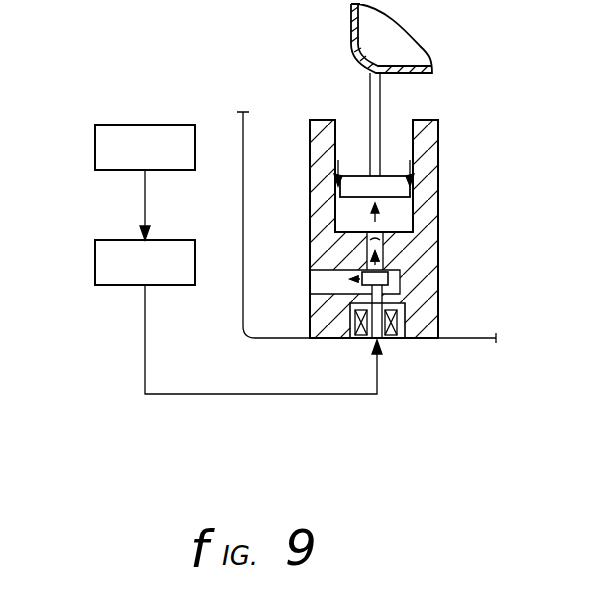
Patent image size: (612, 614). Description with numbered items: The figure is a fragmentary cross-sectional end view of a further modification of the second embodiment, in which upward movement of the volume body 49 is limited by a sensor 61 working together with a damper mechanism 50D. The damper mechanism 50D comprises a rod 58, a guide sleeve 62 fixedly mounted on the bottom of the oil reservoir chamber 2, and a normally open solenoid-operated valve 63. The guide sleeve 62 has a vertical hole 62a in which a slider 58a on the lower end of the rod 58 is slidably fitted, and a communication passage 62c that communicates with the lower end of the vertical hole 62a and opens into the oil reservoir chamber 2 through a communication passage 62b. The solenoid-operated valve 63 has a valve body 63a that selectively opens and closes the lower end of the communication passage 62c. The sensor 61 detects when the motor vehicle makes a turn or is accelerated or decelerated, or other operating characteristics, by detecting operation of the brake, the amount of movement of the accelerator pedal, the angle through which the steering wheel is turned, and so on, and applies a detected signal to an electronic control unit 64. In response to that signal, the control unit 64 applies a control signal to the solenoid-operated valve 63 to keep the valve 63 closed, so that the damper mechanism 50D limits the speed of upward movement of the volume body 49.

The oil reservoir chamber 2 is at (243, 172).
The volume body 49 is at (349, 28).
The damper mechanism 50D is at (445, 153).
The rod 58 is at (367, 90).
The slider 58a is at (405, 187).
The sensor 61 is at (100, 152).
The guide sleeve 62 is at (310, 205).
The vertical hole 62a is at (343, 132).
The communication passage 62b is at (327, 287).
The communication passage 62c is at (382, 248).
The solenoid-operated valve 63 is at (390, 340).
The valve body 63a is at (395, 280).
The electronic control unit 64 is at (110, 280).